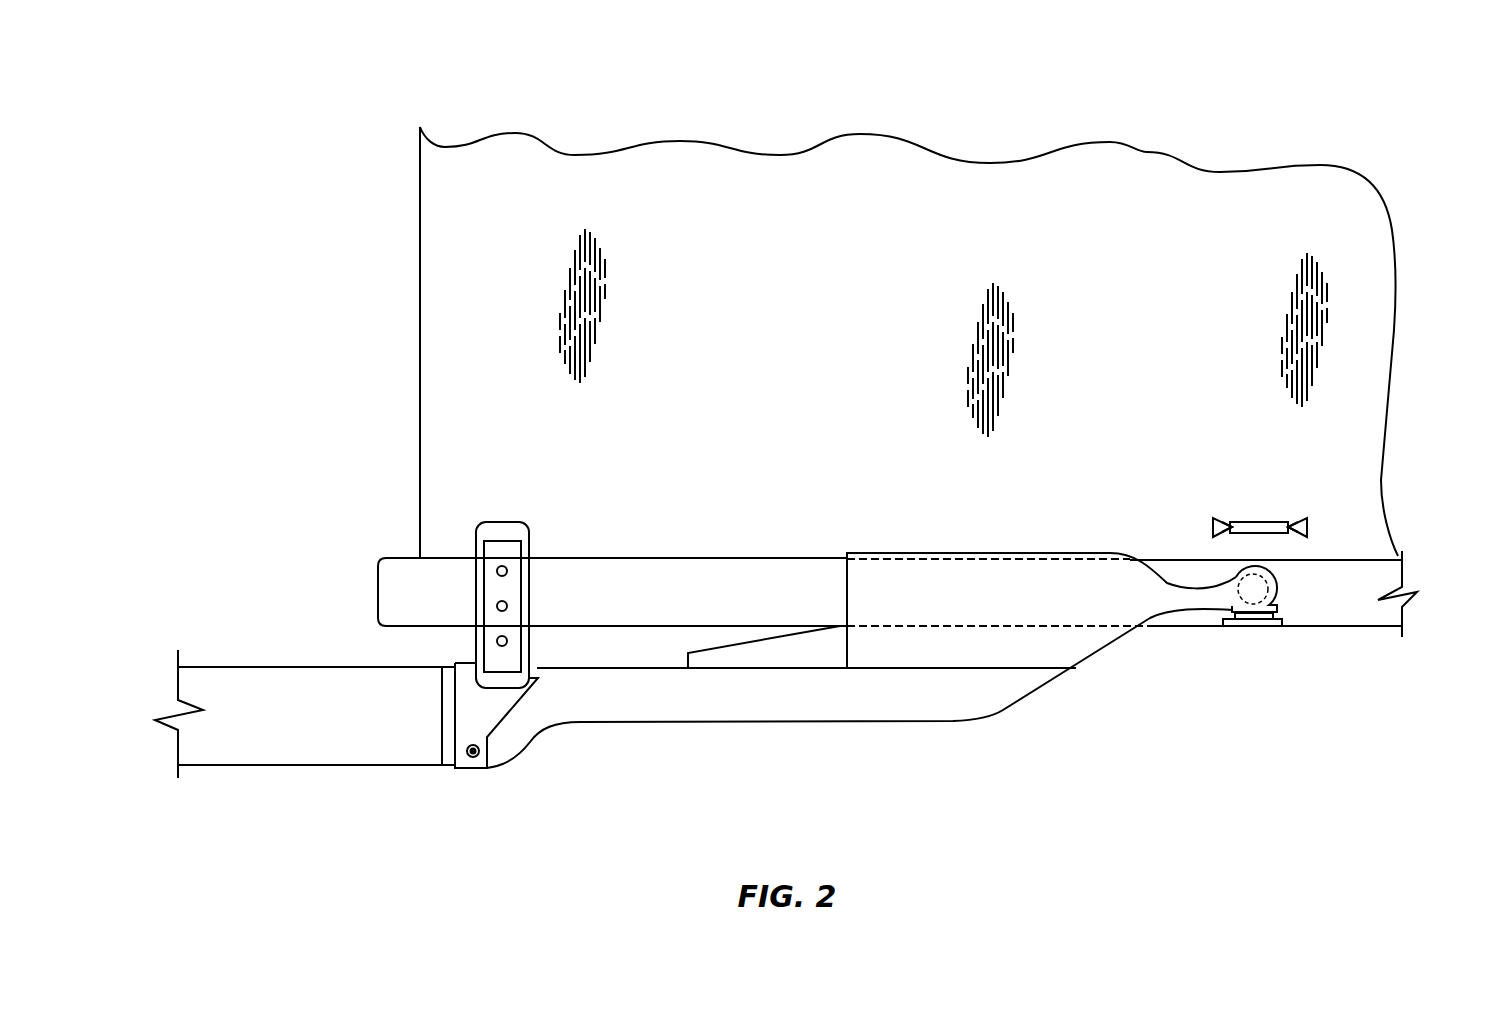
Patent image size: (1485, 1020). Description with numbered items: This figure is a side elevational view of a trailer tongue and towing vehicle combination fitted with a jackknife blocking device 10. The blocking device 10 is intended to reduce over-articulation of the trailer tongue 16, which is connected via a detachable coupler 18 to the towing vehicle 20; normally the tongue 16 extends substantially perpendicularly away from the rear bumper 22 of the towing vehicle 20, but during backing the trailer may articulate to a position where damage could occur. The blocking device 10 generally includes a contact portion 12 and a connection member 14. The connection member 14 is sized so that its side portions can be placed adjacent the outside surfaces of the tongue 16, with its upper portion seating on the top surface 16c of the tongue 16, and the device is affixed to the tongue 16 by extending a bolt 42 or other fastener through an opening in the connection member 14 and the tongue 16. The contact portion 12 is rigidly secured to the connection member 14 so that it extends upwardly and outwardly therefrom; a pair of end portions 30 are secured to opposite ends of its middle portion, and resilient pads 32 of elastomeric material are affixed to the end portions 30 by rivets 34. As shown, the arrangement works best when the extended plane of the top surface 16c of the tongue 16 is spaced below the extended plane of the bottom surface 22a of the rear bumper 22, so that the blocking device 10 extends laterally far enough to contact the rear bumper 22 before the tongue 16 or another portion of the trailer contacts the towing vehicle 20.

The jackknife blocking device 10 is at (432, 642).
The contact portion 12 is at (575, 527).
The connection member 14 is at (483, 710).
The trailer tongue 16 is at (817, 705).
The top surface of tongue 16c is at (632, 660).
The detachable coupler 18 is at (1252, 592).
The towing vehicle 20 is at (437, 410).
The rear bumper 22 is at (1365, 593).
The bottom surface of rear bumper 22a is at (636, 630).
The end portions 30 is at (512, 530).
The pads 32 is at (495, 548).
The rivets 34 is at (497, 573).
The bolt 42 is at (478, 757).